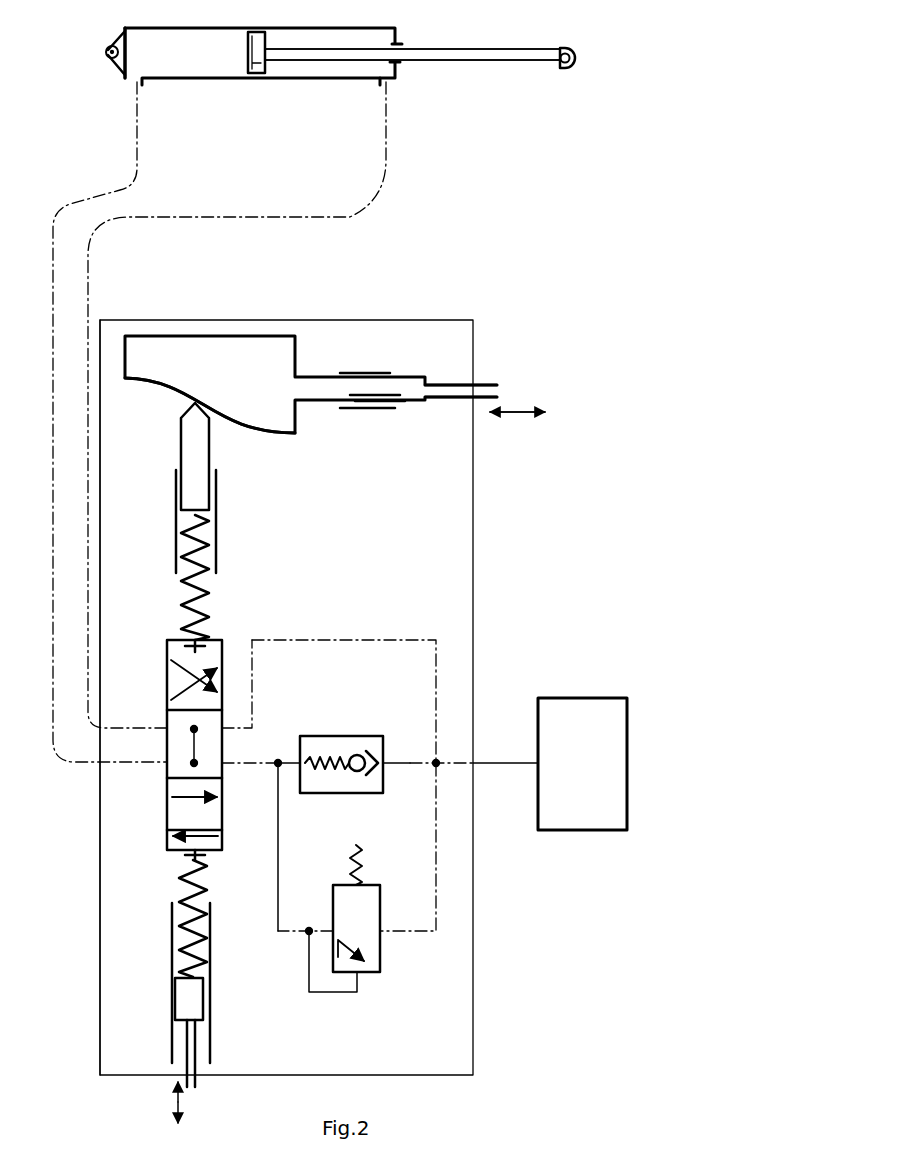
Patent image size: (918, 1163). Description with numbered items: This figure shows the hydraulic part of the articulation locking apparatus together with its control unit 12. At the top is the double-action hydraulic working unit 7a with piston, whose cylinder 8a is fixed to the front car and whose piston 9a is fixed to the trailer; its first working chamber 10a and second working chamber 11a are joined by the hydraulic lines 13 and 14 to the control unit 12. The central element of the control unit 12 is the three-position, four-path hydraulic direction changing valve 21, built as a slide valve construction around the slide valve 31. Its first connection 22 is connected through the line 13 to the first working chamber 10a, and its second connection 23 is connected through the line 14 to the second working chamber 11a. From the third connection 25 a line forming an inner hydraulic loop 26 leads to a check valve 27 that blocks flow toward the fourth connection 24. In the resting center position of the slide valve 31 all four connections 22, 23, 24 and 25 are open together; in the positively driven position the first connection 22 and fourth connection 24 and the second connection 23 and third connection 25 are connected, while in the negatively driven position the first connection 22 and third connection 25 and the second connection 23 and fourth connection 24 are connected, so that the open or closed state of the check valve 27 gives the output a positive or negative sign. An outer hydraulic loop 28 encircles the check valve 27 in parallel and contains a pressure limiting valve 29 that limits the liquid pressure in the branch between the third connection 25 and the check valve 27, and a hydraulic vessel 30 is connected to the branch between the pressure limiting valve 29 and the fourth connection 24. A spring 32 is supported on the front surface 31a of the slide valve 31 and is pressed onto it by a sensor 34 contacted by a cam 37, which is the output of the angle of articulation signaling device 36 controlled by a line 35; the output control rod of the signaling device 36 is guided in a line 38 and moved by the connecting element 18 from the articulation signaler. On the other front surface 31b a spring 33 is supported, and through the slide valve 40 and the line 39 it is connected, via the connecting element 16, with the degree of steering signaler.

The double-action hydraulic working unit 7a is at (222, 50).
The cylinder 8a is at (132, 28).
The piston 9a is at (498, 60).
The first working chamber 10a is at (178, 80).
The second working chamber 11a is at (338, 40).
The control unit 12 is at (457, 512).
The hydraulic line 13 is at (52, 403).
The hydraulic line 14 is at (87, 505).
The connecting element 16 is at (185, 1048).
The connecting element 18 is at (495, 385).
The three-position four-path hydraulic direction changing valve 21 is at (99, 866).
The first connection 22 is at (148, 763).
The second connection 23 is at (145, 727).
The fourth connection 24 is at (243, 730).
The third connection 25 is at (258, 762).
The inner hydraulic loop 26 is at (410, 762).
The check valve 27 is at (345, 736).
The outer hydraulic loop 28 is at (438, 900).
The pressure limiting valve 29 is at (381, 960).
The hydraulic vessel 30 is at (580, 716).
The slide valve 31 is at (200, 648).
The front surface of the slide valve 31a is at (185, 640).
The other front surface of the slide valve 31b is at (205, 855).
The spring 32 is at (213, 570).
The spring 33 is at (200, 955).
The sensor 34 is at (188, 418).
The line 35 is at (176, 500).
The angle of articulation signaling device 36 is at (146, 348).
The cam 37 is at (272, 428).
The line 38 is at (363, 372).
The line 39 is at (212, 1035).
The slide valve 40 is at (183, 992).